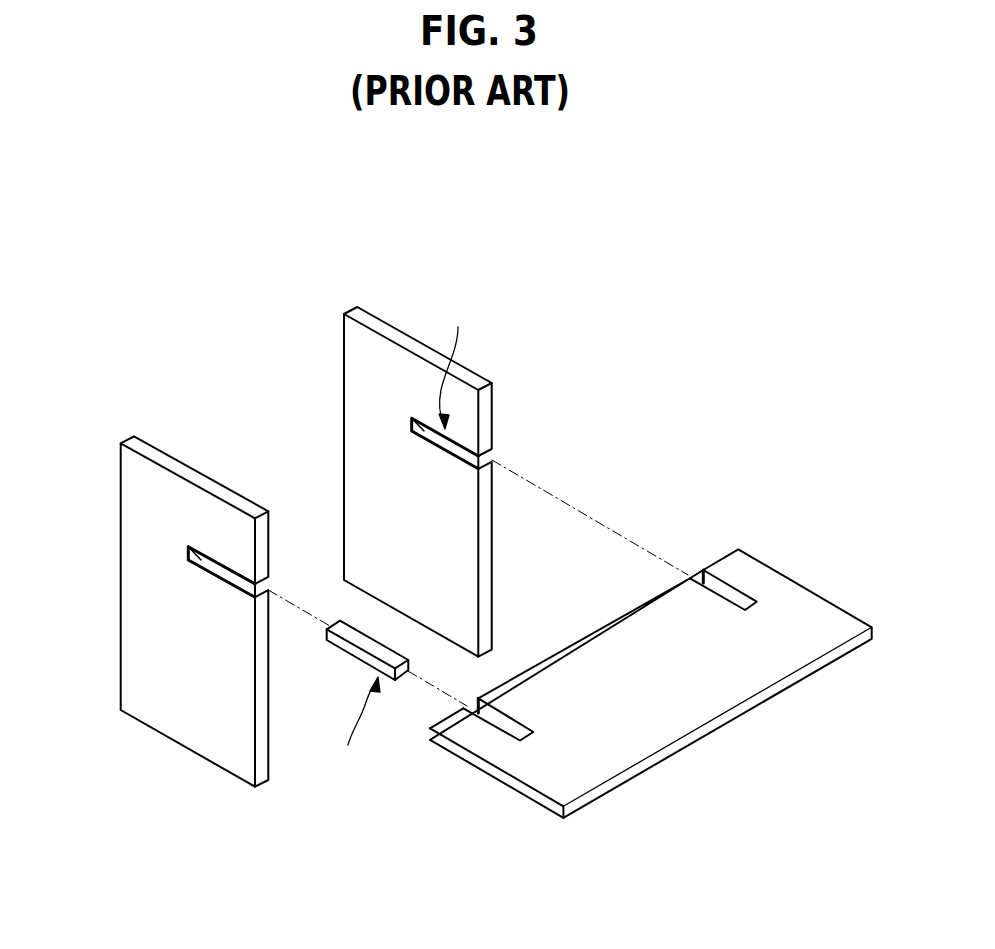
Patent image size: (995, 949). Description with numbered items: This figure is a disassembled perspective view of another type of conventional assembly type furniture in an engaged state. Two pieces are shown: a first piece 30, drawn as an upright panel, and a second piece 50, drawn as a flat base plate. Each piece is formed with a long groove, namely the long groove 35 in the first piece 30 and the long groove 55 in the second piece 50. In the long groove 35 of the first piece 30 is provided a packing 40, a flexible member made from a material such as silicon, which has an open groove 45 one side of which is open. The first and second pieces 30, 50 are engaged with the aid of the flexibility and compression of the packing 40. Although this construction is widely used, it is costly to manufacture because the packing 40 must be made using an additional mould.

The first piece 30 is at (362, 358).
The long groove 35 is at (496, 455).
The packing 40 is at (401, 536).
The open groove 45 is at (360, 663).
The second piece 50 is at (796, 594).
The long groove 55 is at (690, 578).